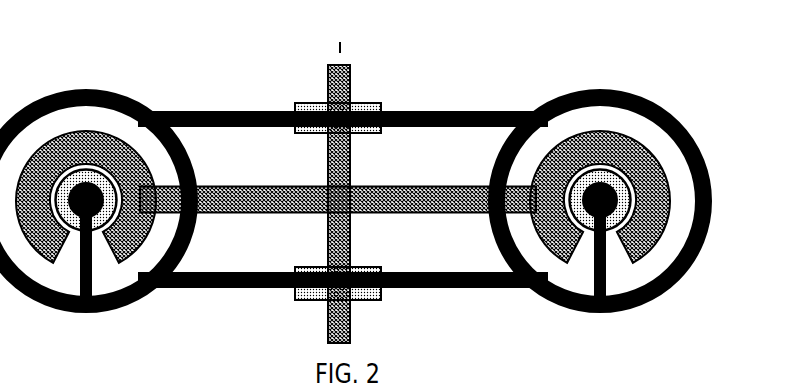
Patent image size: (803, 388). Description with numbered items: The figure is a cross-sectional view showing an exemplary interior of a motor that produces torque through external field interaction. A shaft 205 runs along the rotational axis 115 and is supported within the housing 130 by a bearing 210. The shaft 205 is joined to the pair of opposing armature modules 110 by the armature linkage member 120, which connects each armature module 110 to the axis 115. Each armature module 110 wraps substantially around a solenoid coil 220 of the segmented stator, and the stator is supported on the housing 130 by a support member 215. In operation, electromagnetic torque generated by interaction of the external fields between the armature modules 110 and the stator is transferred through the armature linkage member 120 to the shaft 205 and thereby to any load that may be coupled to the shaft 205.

The armature module 110 is at (74, 130).
The rotational axis 115 is at (341, 31).
The armature linkage member 120 is at (210, 187).
The housing 130 is at (587, 88).
The shaft 205 is at (351, 81).
The bearing 210 is at (381, 103).
The support member 215 is at (92, 277).
The solenoid coil 220 is at (91, 168).